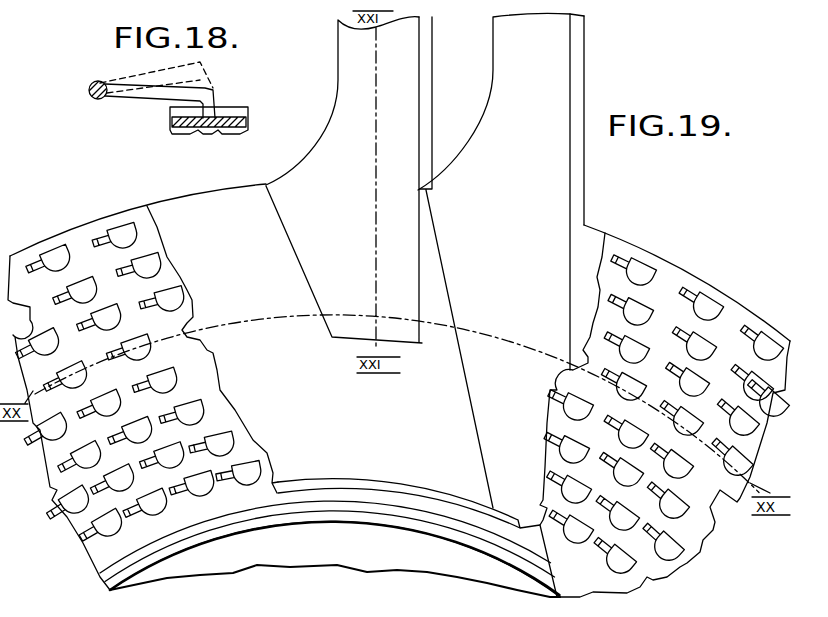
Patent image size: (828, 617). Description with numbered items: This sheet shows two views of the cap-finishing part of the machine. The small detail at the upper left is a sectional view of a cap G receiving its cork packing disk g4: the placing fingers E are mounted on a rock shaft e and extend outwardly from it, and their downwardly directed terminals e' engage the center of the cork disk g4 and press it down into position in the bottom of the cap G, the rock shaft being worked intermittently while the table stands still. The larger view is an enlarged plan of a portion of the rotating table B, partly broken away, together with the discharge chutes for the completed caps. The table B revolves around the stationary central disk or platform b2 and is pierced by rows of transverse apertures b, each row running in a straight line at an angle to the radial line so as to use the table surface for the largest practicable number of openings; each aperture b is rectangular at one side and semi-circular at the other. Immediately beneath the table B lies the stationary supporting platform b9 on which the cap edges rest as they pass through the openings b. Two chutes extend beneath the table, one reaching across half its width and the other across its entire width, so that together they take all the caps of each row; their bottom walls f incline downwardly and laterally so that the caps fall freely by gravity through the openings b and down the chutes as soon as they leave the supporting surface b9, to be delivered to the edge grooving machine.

In FIG. 19, the rotating table B is at (78, 237).
In FIG. 19, the transverse apertures b is at (401, 403).
In FIG. 19, the pocket slot b'' is at (395, 433).
In FIG. 19, the stationary central disk or platform b2 is at (330, 538).
In FIG. 19, the stationary supporting platform b9 is at (234, 197).
In FIG. 18, the rock shaft e is at (98, 98).
In FIG. 18, the downwardly directed terminals e' is at (184, 85).
In FIG. 18, the placing fingers E is at (215, 100).
In FIG. 18, the cap G is at (170, 130).
In FIG. 18, the cork packing disks g4 is at (250, 122).
In FIG. 19, the bottom walls f is at (425, 113).
In FIG. 19, the stem F' is at (425, 261).